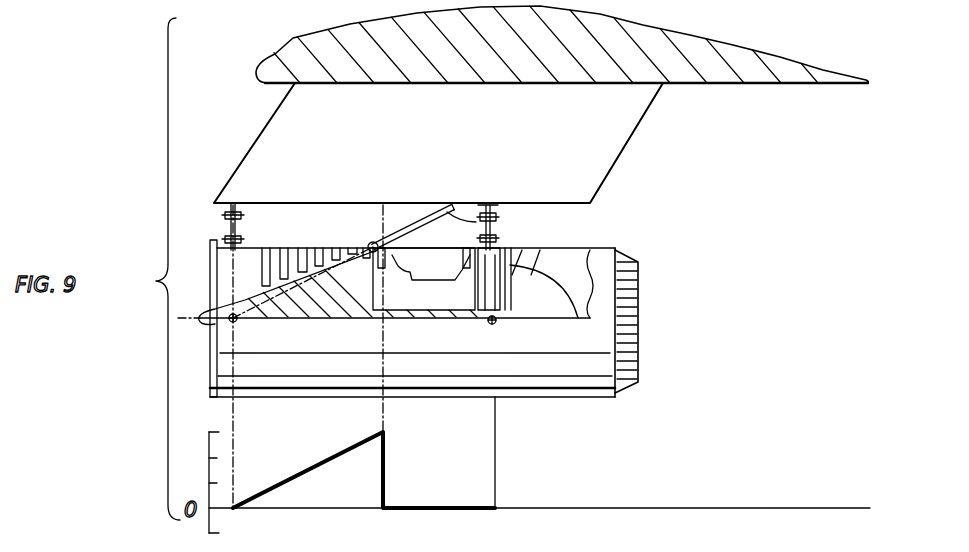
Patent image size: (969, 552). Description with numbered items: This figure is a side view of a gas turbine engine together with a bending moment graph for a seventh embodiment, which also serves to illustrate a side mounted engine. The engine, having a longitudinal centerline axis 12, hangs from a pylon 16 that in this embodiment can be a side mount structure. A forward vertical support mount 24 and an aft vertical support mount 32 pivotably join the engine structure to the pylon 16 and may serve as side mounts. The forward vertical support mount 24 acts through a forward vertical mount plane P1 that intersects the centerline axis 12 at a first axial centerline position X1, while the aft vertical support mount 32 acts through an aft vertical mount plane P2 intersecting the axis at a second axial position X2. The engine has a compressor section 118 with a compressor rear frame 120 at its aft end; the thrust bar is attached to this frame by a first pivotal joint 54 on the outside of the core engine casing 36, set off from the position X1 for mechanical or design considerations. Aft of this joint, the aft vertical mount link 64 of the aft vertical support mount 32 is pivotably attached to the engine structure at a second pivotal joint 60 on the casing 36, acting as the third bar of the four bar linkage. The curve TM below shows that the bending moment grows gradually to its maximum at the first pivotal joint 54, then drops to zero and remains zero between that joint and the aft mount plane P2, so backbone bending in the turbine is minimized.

The pylon 16 is at (628, 142).
The longitudinal centerline axis 12 is at (199, 316).
The compressor section 118 is at (306, 248).
The forward vertical support mount 24 is at (256, 224).
The aft vertical support mount 32 is at (506, 230).
The core engine casing 36 is at (612, 248).
The first pivotal joint 54 is at (373, 243).
The second pivotal joint 60 is at (494, 243).
The aft vertical mount link 64 is at (444, 208).
The compressor rear frame 120 is at (395, 288).
The first axial centerline position X1 is at (240, 322).
The second axial position X2 is at (488, 324).
The forward vertical mount plane P1 is at (236, 412).
The aft vertical mount plane P2 is at (497, 425).
The engine thrust bending moment curve TM is at (385, 472).